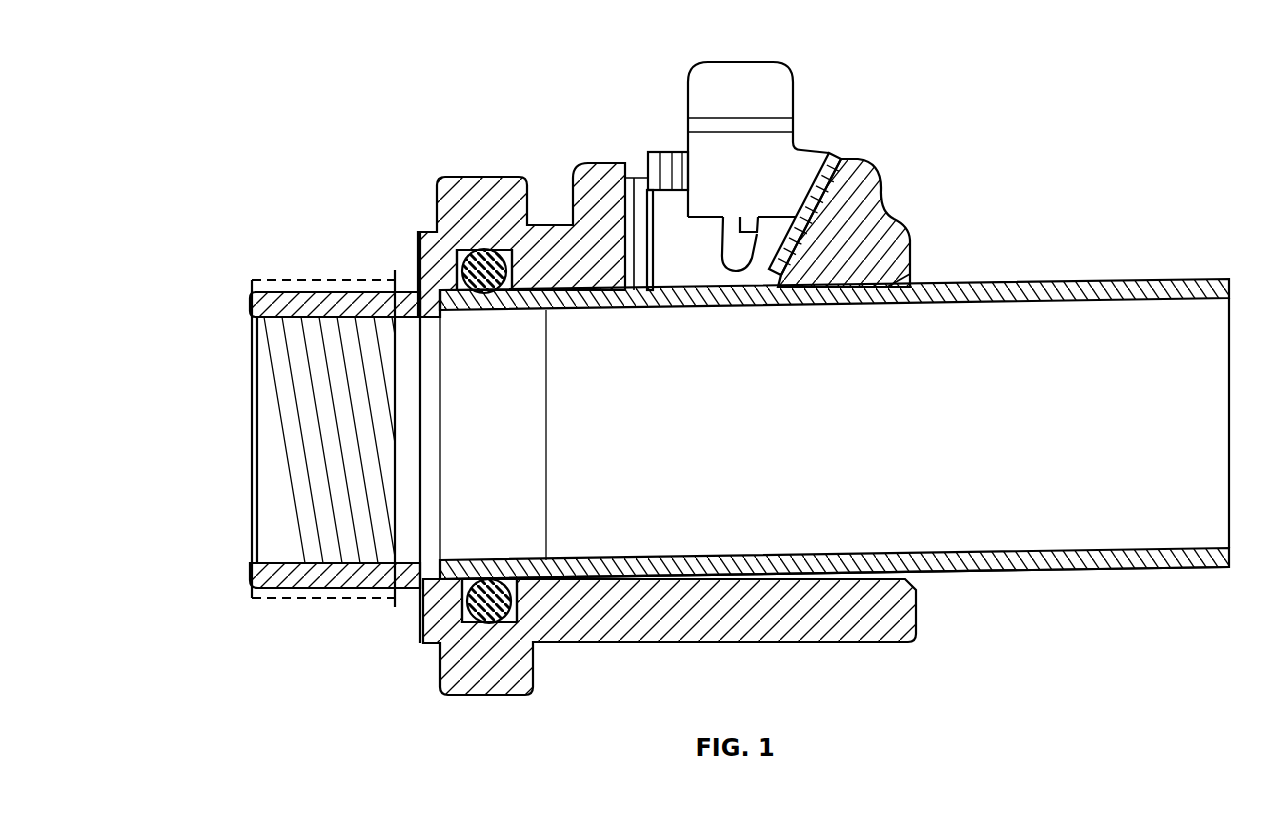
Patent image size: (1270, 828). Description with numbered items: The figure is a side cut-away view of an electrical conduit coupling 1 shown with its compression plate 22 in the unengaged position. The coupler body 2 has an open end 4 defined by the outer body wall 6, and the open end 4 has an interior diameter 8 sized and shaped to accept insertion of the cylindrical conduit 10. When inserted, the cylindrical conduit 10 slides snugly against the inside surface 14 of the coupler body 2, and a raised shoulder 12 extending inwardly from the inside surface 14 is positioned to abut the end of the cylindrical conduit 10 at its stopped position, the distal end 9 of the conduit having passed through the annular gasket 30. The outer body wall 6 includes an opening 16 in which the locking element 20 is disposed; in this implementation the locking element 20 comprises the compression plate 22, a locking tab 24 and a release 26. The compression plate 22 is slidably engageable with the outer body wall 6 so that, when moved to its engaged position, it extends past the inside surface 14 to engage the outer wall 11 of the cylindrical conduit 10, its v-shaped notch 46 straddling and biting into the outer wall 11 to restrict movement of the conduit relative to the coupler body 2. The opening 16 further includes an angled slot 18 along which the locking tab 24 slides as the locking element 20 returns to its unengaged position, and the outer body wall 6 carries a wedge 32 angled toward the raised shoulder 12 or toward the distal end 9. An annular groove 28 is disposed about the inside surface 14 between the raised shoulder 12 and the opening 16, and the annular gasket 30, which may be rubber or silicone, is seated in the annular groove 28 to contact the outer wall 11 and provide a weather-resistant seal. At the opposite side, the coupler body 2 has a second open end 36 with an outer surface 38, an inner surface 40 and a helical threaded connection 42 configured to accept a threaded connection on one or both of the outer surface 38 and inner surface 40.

The electrical conduit coupling 1 is at (324, 119).
The coupler body 2 is at (615, 682).
The open end 4 is at (905, 287).
The outer body wall 6 is at (600, 260).
The interior diameter 8 is at (548, 425).
The distal end 9 is at (443, 500).
The cylindrical conduit 10 is at (1117, 594).
The outer wall 11 is at (950, 572).
The raised shoulder 12 is at (435, 305).
The inside surface 14 is at (583, 280).
The opening 16 is at (683, 263).
The angled slot 18 is at (738, 247).
The locking element 20 is at (791, 142).
The compression plate 22 is at (840, 155).
The locking tab 24 is at (747, 232).
The release 26 is at (757, 150).
The annular groove 28 is at (511, 250).
The annular gasket 30 is at (476, 250).
The wedge 32 is at (840, 215).
The second open end 36 is at (248, 343).
The outer surface 38 is at (293, 300).
The inner surface 40 is at (297, 563).
The helical threaded connection 42 is at (305, 443).
The v-shaped notch 46 is at (780, 265).